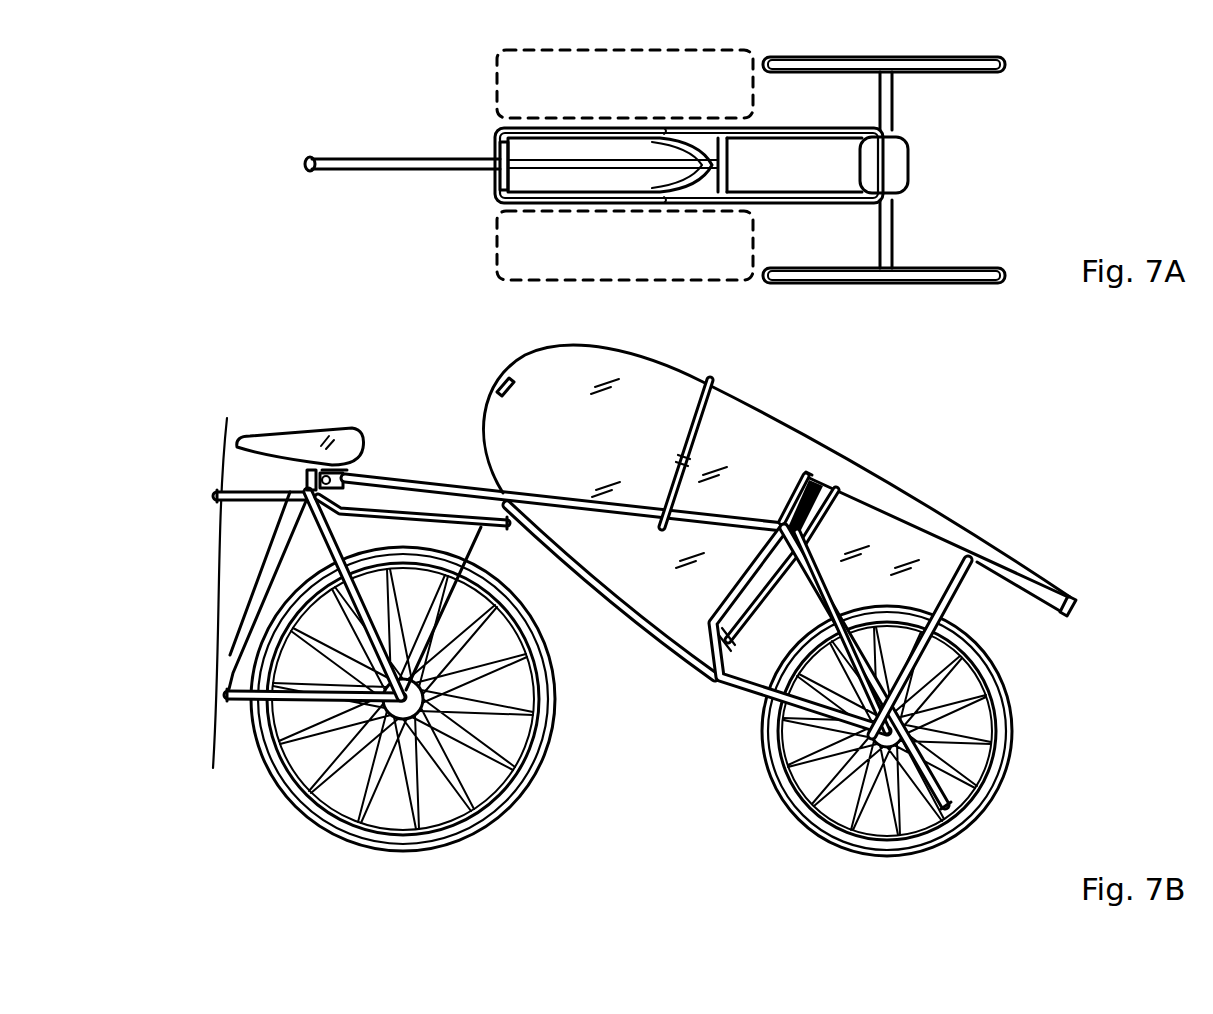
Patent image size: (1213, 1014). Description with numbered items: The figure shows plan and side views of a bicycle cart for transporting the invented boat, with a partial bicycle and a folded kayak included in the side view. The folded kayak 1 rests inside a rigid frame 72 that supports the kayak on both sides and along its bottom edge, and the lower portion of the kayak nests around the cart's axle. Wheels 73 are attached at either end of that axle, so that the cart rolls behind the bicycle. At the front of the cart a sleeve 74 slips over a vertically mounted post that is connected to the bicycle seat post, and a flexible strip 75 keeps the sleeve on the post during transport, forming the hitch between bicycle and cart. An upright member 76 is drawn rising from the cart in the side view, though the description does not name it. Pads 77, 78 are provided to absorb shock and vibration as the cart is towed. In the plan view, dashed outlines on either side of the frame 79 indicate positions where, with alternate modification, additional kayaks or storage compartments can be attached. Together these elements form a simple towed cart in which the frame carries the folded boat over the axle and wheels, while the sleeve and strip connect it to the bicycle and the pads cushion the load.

In FIG. 7B, the folded kayak 1 is at (655, 572).
In FIG. 7B, the rigid frame 72 is at (720, 678).
In FIG. 7B, the wheels 73 is at (787, 792).
In FIG. 7A, the sleeve 74 is at (315, 158).
In FIG. 7B, the flexible strip 75 is at (352, 468).
In FIG. 7B, the roll hoop 76 is at (710, 397).
In FIG. 7A, the pad 77 is at (897, 165).
In FIG. 7A, the pad 78 is at (497, 187).
In FIG. 7A, the attachment positions on either side of the frame 79 is at (540, 247).